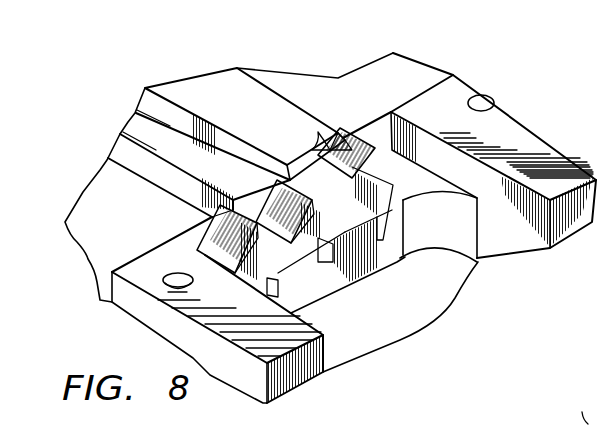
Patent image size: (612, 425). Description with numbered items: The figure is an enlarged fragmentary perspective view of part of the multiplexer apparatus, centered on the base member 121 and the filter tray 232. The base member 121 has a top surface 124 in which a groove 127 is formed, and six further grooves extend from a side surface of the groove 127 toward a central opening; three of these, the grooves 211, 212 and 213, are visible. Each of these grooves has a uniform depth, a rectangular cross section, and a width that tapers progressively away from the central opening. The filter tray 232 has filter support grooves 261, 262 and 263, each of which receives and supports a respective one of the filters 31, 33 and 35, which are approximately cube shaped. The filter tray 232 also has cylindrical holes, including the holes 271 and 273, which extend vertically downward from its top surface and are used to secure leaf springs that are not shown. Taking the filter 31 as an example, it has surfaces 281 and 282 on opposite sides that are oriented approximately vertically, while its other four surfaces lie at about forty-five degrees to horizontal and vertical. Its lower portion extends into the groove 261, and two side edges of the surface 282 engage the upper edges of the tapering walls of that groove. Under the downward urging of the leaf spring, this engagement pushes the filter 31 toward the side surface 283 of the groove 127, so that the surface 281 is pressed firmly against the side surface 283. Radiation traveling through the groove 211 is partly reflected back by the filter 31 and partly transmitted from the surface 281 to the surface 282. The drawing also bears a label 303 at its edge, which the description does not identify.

The base member 121 is at (83, 187).
The top surface 124 is at (290, 80).
The groove 127 is at (460, 275).
The groove 211 is at (220, 78).
The groove 212 is at (153, 88).
The groove 213 is at (120, 140).
The filter tray 232 is at (553, 110).
The filter support groove 261 is at (396, 262).
The filter support groove 262 is at (346, 290).
The filter support groove 263 is at (305, 318).
The cylindrical hole 271 is at (488, 100).
The cylindrical hole 273 is at (166, 284).
The surface 281 is at (320, 142).
The surface 282 is at (438, 226).
The side surface 283 is at (379, 123).
The adjacent component 303 is at (586, 404).
The filter 31 is at (348, 127).
The filter 33 is at (270, 280).
The filter 35 is at (214, 240).